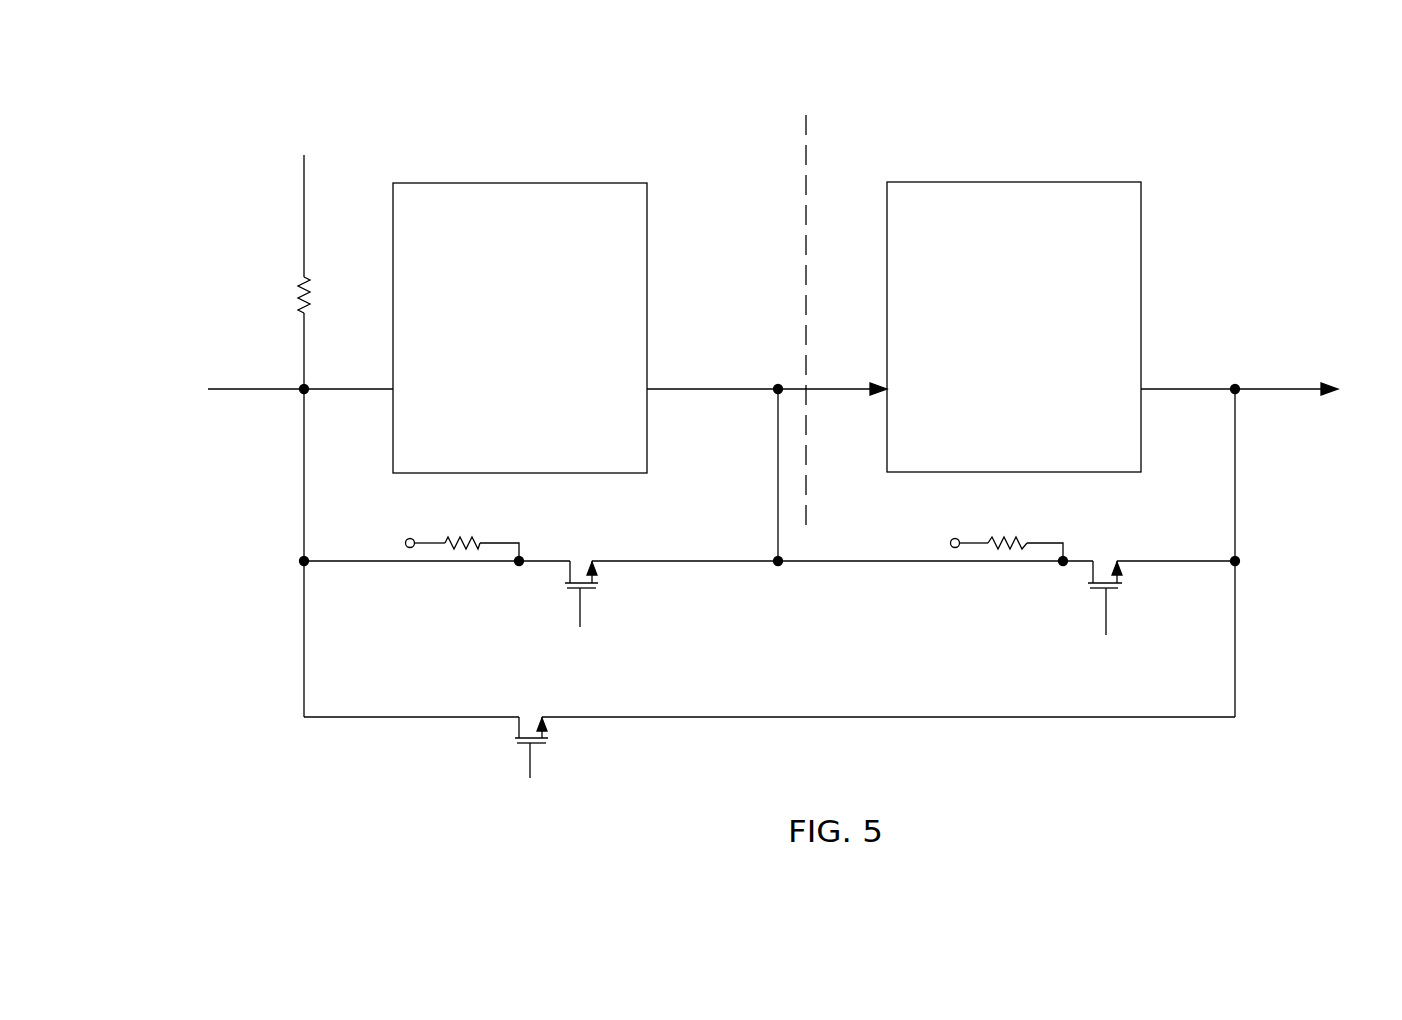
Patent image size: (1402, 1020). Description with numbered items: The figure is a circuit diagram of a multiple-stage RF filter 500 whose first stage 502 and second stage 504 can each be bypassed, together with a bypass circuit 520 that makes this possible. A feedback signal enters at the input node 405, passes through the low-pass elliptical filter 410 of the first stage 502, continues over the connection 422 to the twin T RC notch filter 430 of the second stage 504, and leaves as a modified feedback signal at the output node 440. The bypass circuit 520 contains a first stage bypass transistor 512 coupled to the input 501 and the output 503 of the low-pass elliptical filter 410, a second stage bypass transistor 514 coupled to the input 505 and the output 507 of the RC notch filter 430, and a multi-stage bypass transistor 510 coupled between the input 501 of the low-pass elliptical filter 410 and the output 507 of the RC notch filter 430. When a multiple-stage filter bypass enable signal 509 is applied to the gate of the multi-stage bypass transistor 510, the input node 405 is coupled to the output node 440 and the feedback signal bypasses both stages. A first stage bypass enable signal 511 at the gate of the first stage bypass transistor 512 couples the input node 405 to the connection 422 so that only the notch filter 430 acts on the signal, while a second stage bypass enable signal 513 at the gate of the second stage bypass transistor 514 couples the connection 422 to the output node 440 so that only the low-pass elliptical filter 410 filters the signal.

The multiple-stage RF filter 500 is at (746, 420).
The first stage 502 is at (561, 251).
The second stage 504 is at (1032, 250).
The low-pass elliptical filter 410 is at (637, 182).
The twin T RC notch filter 430 is at (1083, 182).
The input node 405 is at (303, 386).
The output node 440 is at (1253, 387).
The input of the LPEF 501 is at (348, 423).
The output of the LPEF 503 is at (712, 429).
The connection 422 is at (749, 473).
The input of the RC notch filter 505 is at (832, 420).
The output of the RC notch filter 507 is at (1188, 428).
The bypass circuit 520 is at (264, 758).
The multi-stage bypass transistor 510 is at (515, 738).
The multiple-stage filter bypass enable signal 509 is at (650, 784).
The first stage bypass transistor 512 is at (565, 584).
The first stage bypass enable signal 511 is at (617, 637).
The second stage bypass transistor 514 is at (1088, 584).
The second stage bypass enable signal 513 is at (1060, 640).